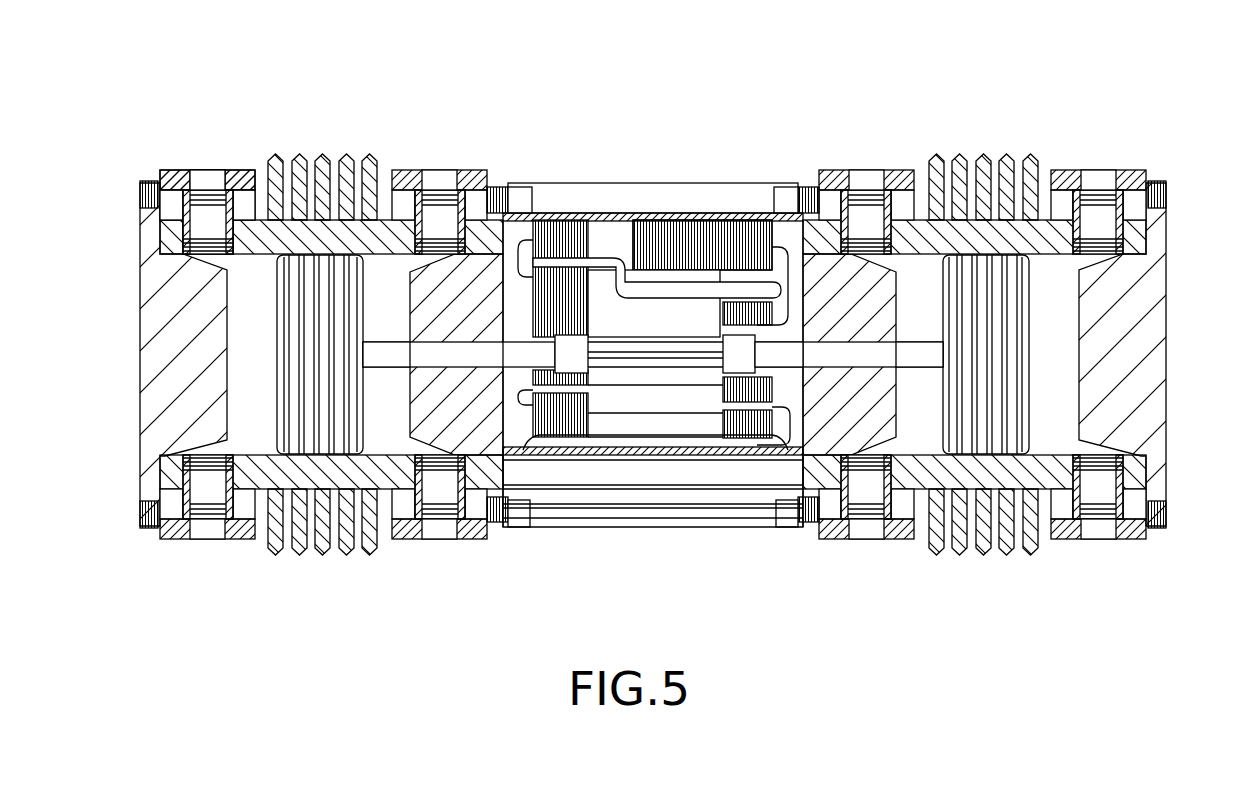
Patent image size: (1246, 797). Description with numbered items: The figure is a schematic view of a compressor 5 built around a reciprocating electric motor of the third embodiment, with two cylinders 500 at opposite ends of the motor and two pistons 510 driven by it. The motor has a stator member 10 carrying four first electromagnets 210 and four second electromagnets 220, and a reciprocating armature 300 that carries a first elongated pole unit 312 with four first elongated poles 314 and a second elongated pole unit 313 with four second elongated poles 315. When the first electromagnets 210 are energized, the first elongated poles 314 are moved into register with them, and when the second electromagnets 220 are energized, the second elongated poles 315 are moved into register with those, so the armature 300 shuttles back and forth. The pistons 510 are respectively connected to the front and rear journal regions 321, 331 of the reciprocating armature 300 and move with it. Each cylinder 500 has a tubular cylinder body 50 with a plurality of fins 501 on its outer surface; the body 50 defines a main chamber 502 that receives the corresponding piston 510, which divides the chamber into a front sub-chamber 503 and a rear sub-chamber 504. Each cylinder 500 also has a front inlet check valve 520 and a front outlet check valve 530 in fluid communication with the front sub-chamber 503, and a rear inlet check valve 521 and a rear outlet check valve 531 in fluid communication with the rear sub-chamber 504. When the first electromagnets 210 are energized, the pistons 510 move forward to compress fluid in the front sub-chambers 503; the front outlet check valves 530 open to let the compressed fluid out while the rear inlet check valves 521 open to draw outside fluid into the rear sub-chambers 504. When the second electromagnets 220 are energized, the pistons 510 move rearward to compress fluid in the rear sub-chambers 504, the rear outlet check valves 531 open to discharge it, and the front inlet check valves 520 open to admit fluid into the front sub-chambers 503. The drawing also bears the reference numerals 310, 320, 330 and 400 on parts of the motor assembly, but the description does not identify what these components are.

The compressor 5 is at (1146, 26).
The stator member 10 is at (777, 236).
The tubular cylinder body 50 is at (253, 238).
The first electromagnets 210 is at (520, 228).
The second electromagnets 220 is at (793, 311).
The reciprocating armature 300 is at (690, 338).
The rotor 310 is at (679, 420).
The first elongated pole unit 312 is at (614, 104).
The second elongated pole unit 313 is at (702, 104).
The first elongated poles 314 is at (611, 337).
The second elongated poles 315 is at (656, 404).
The left shaft 320 is at (381, 336).
The front journal region 321 is at (381, 370).
The right shaft 330 is at (923, 333).
The rear journal region 331 is at (918, 362).
The base housing 400 is at (739, 533).
The cylinder 500 is at (687, 394).
The fins 501 is at (275, 155).
The main chamber 502 is at (653, 428).
The front sub-chamber 503 is at (257, 445).
The rear sub-chamber 504 is at (378, 437).
The piston 510 is at (306, 302).
The front inlet check valve 520 is at (207, 178).
The rear inlet check valve 521 is at (440, 186).
The front outlet check valve 530 is at (204, 531).
The rear outlet check valve 531 is at (438, 531).